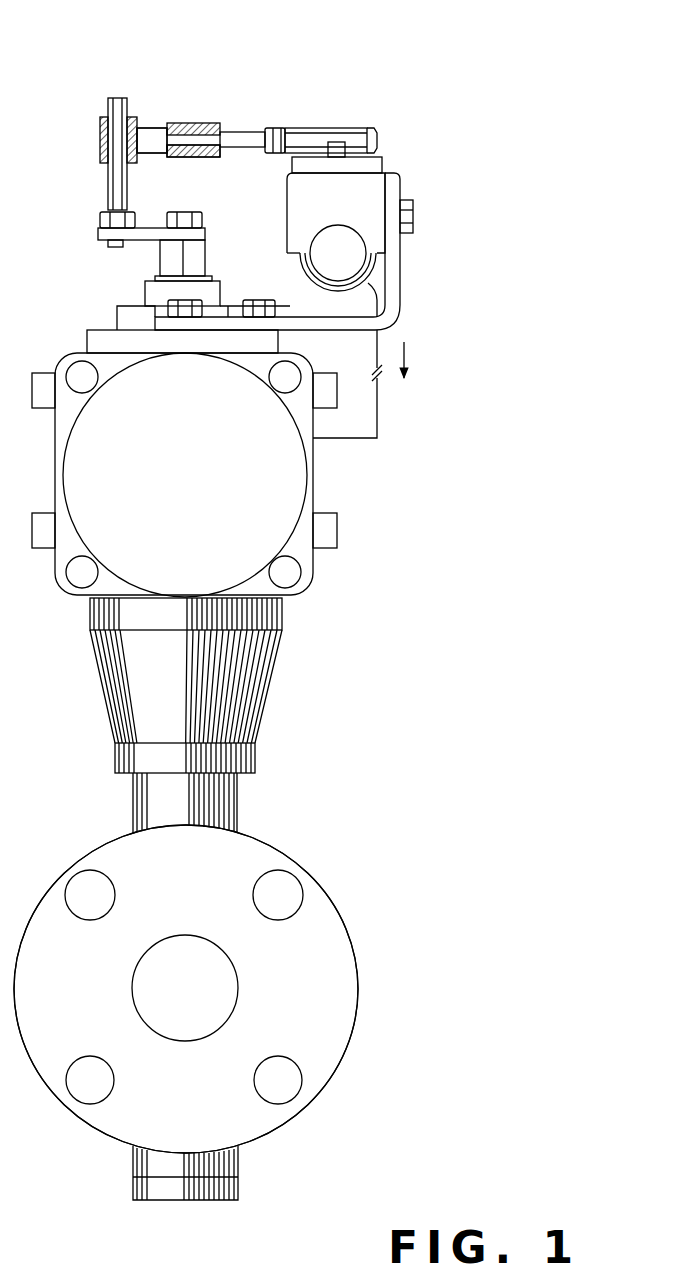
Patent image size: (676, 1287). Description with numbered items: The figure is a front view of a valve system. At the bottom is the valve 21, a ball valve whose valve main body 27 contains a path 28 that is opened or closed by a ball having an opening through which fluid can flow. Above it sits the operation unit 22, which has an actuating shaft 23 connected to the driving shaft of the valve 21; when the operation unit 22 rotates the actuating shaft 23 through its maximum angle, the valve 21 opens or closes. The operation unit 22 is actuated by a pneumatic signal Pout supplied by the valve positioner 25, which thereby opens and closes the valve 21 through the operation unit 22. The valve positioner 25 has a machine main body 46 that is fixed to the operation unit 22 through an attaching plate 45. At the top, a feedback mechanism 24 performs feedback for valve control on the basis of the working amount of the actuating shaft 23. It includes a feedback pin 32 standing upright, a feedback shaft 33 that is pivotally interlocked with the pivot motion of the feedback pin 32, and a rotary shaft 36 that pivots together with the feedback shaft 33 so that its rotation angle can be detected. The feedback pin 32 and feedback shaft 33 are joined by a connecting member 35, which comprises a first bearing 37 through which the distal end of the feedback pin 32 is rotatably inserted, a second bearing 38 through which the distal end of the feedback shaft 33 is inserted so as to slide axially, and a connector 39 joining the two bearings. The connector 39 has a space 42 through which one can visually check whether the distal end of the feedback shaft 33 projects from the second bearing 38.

The valve 21 is at (356, 894).
The operation unit 22 is at (318, 574).
The actuating shaft 23 is at (160, 257).
The feedback mechanism 24 is at (263, 24).
The valve positioner 25 is at (351, 200).
The valve main body 27 is at (360, 1012).
The path 28 is at (223, 1005).
The feedback pin 32 is at (108, 100).
The feedback shaft 33 is at (235, 132).
The connecting member 35 is at (188, 120).
The rotary shaft 36 is at (338, 142).
The first bearing 37 is at (100, 137).
The second bearing 38 is at (200, 157).
The connector 39 is at (151, 153).
The space 42 is at (155, 134).
The attaching plate 45 is at (403, 290).
The machine main body 46 is at (380, 188).